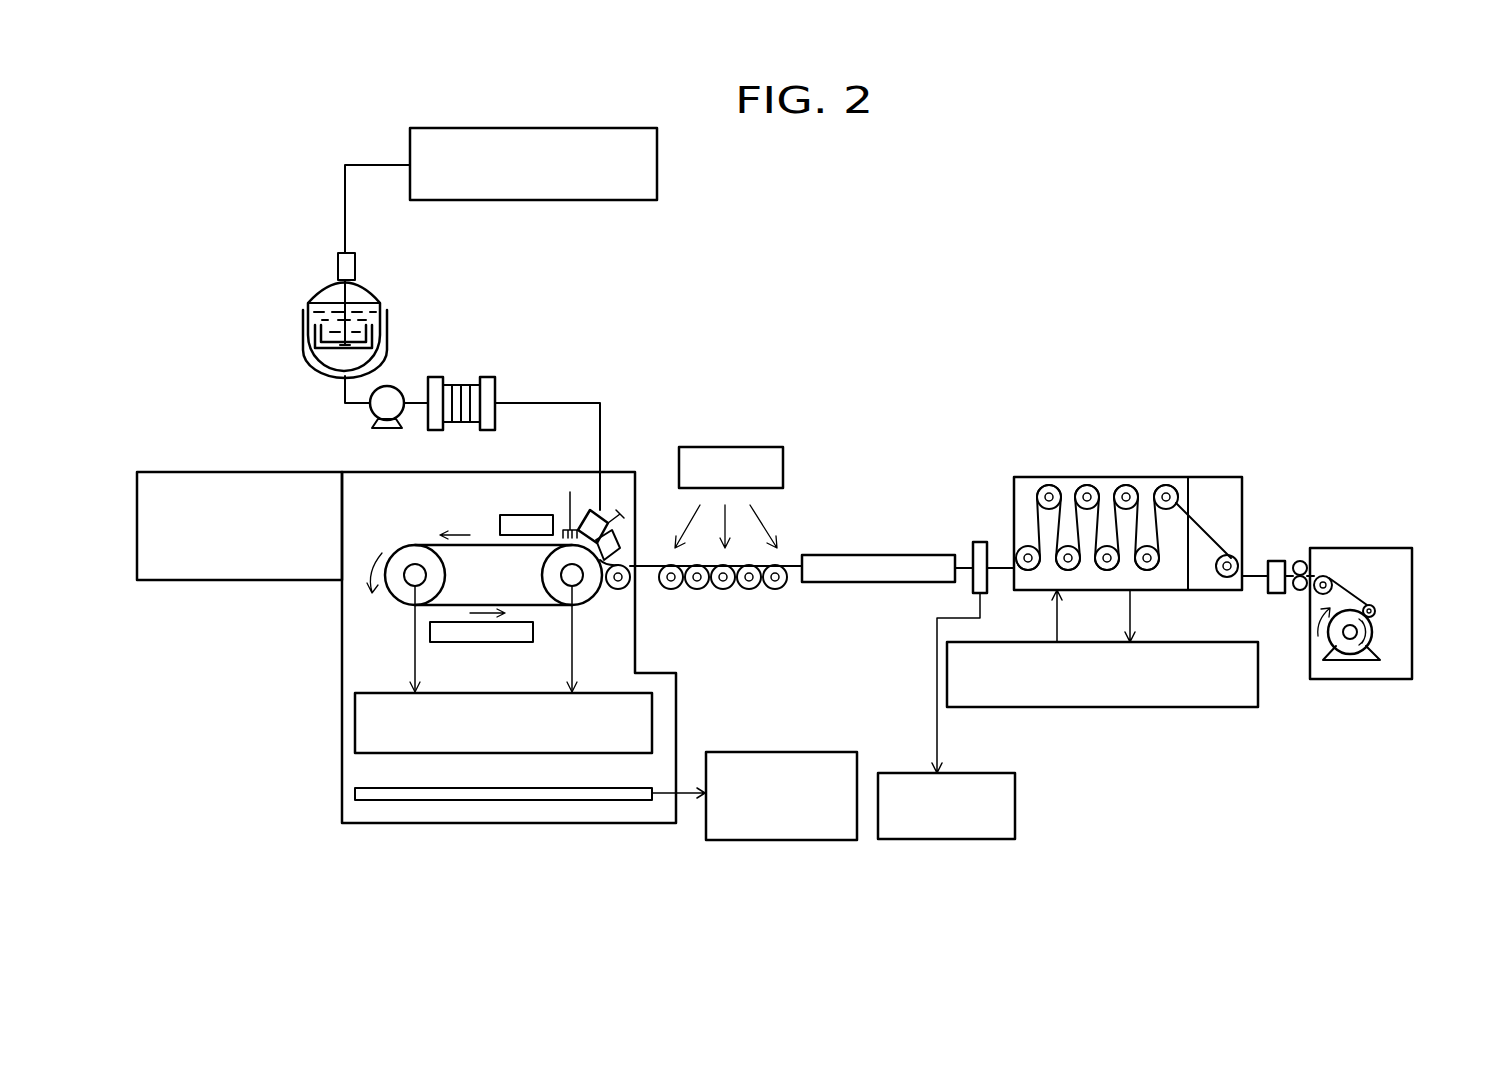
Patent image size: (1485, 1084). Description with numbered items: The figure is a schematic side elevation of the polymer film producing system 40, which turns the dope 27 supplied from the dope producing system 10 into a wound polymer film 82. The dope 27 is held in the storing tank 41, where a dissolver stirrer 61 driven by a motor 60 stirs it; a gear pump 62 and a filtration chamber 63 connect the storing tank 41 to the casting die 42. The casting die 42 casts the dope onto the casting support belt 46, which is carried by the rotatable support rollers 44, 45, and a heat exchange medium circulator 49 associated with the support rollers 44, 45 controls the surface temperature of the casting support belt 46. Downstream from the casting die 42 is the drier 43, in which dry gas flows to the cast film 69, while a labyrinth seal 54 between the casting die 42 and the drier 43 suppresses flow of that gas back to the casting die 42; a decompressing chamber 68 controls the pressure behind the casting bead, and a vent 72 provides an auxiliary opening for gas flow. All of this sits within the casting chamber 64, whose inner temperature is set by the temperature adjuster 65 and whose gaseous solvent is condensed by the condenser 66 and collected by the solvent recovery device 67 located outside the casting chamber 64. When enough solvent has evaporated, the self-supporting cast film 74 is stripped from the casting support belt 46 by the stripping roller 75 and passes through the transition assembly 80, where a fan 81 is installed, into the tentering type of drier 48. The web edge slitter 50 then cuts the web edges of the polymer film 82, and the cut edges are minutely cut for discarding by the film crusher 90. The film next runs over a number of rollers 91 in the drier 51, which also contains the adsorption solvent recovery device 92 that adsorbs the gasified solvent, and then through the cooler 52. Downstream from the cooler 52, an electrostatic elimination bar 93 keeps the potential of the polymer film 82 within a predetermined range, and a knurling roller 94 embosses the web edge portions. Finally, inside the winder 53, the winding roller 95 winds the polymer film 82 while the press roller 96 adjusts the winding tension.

The dope producing system 10 is at (660, 150).
The dope 27 is at (357, 353).
The polymer film producing system 40 is at (876, 352).
The storing tank 41 is at (316, 285).
The casting die 42 is at (597, 510).
The drier 43 is at (512, 513).
The support roller 44 is at (403, 593).
The support roller 45 is at (587, 593).
The casting support belt 46 is at (617, 560).
The tentering type of drier 48 is at (878, 565).
The heat exchange medium circulator 49 is at (355, 721).
The web edge slitter 50 is at (983, 540).
The drier 51 is at (1165, 477).
The cooler 52 is at (1213, 477).
The winder 53 is at (1357, 548).
The labyrinth seal 54 is at (568, 507).
The motor 60 is at (352, 265).
The dissolver stirrer 61 is at (323, 343).
The gear pump 62 is at (388, 410).
The filtration chamber 63 is at (488, 385).
The casting chamber 64 is at (342, 768).
The temperature adjuster 65 is at (212, 472).
The condenser 66 is at (488, 800).
The solvent recovery device 67 is at (787, 752).
The decompressing chamber 68 is at (615, 513).
The cast film 69 is at (487, 545).
The vent 72 is at (490, 632).
The self-supporting cast film 74 is at (650, 572).
The stripping roller 75 is at (623, 589).
The transition assembly 80 is at (785, 590).
The fan 81 is at (727, 447).
The polymer film 82 is at (966, 567).
The film crusher 90 is at (945, 840).
The rollers 91 is at (1126, 488).
The adsorption solvent recovery device 92 is at (1097, 707).
The electrostatic elimination bar 93 is at (1274, 560).
The knurling roller 94 is at (1300, 560).
The winding roller 95 is at (1333, 645).
The press roller 96 is at (1375, 610).